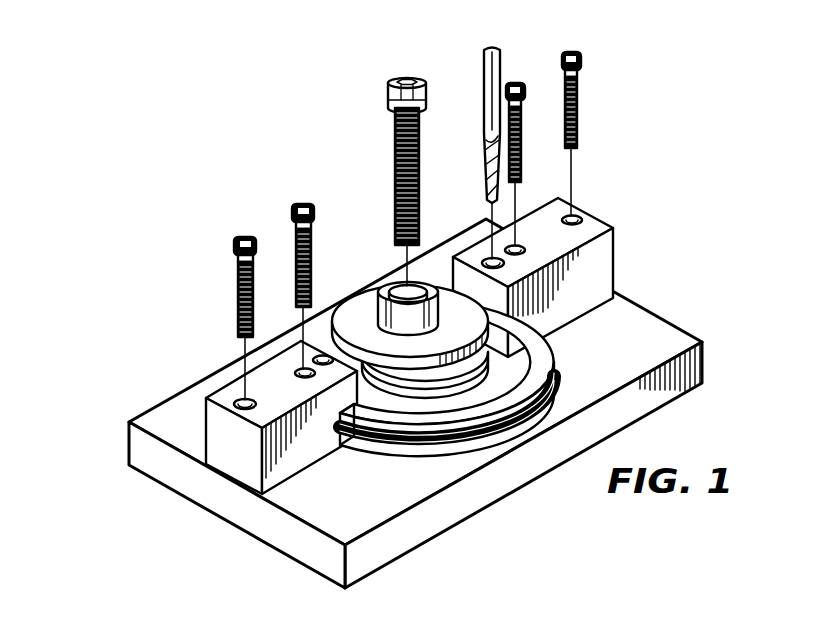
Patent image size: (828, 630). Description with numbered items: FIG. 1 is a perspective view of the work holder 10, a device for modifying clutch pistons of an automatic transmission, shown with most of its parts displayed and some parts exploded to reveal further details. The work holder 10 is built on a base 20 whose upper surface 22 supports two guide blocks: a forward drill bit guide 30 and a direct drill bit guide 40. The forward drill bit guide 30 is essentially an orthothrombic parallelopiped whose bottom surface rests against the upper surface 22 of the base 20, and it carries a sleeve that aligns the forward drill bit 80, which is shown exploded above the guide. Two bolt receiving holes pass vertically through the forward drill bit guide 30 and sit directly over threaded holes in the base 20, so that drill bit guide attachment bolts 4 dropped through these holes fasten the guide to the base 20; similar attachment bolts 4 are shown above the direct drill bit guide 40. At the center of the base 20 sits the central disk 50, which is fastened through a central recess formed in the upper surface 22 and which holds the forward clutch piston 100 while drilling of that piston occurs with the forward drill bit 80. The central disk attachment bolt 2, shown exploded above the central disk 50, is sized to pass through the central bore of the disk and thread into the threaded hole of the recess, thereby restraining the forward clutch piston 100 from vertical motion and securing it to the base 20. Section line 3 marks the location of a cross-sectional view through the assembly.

The work holder 10 is at (172, 268).
The central disk attachment bolt 2 is at (397, 137).
The drill bit guide attachment bolts 4 is at (296, 205).
The forward drill bit 80 is at (484, 72).
The central disk 50 is at (366, 288).
The forward drill bit guide 30 is at (590, 218).
The direct drill bit guide 40 is at (228, 443).
The upper surface 22 is at (334, 521).
The base 20 is at (403, 530).
The forward clutch piston 100 is at (466, 414).
The section line 3- 3 is at (615, 273).